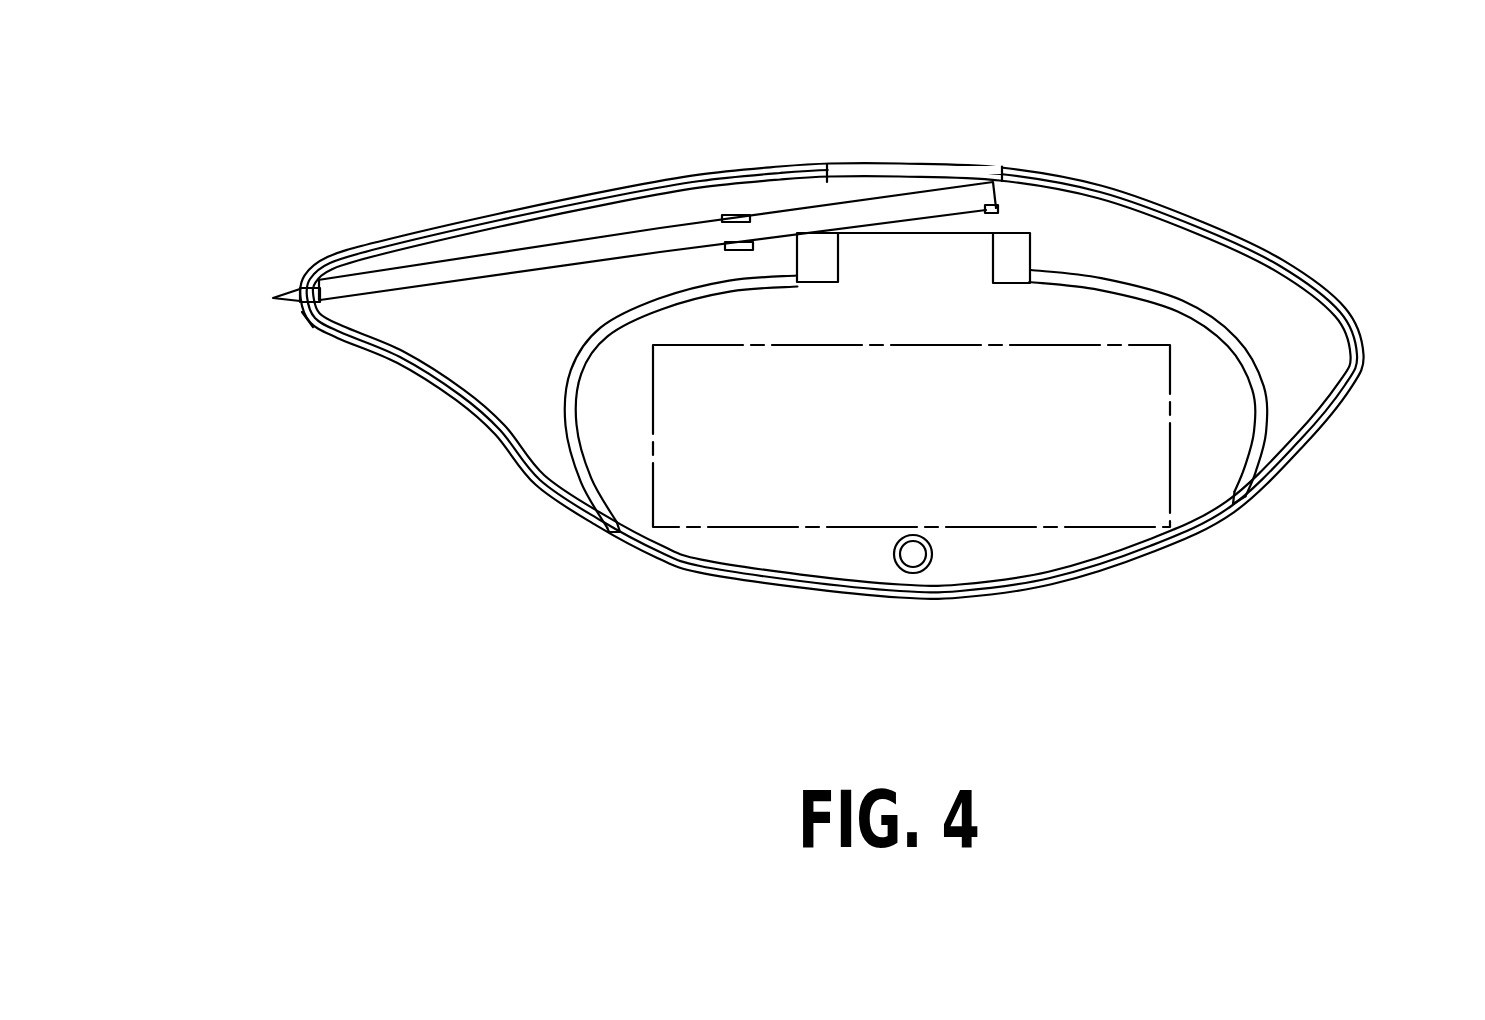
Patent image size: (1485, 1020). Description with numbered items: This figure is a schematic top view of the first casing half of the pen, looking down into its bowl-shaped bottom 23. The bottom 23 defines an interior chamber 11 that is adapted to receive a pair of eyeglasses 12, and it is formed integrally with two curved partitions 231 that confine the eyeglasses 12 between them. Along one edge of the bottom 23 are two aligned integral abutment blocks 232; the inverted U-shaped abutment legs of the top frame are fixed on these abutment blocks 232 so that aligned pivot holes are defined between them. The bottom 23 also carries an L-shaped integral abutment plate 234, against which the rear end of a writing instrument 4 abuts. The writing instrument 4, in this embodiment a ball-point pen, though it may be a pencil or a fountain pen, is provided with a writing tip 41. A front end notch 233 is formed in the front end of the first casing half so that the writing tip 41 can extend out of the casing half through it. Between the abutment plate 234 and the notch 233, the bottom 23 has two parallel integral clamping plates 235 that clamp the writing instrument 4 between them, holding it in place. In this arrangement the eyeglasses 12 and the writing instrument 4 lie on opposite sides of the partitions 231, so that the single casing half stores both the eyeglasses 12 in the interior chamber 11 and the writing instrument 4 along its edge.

The writing instrument 4 is at (590, 197).
The writing tip 41 is at (273, 298).
The interior chamber 11 is at (1070, 547).
The eyeglasses 12 is at (733, 518).
The bowl-shaped bottom 23 is at (1200, 222).
The curved partitions 231 is at (577, 445).
The abutment blocks 232 is at (827, 253).
The front end notch 233 is at (317, 330).
The abutment plate 234 is at (1000, 197).
The clamping plates 235 is at (732, 217).